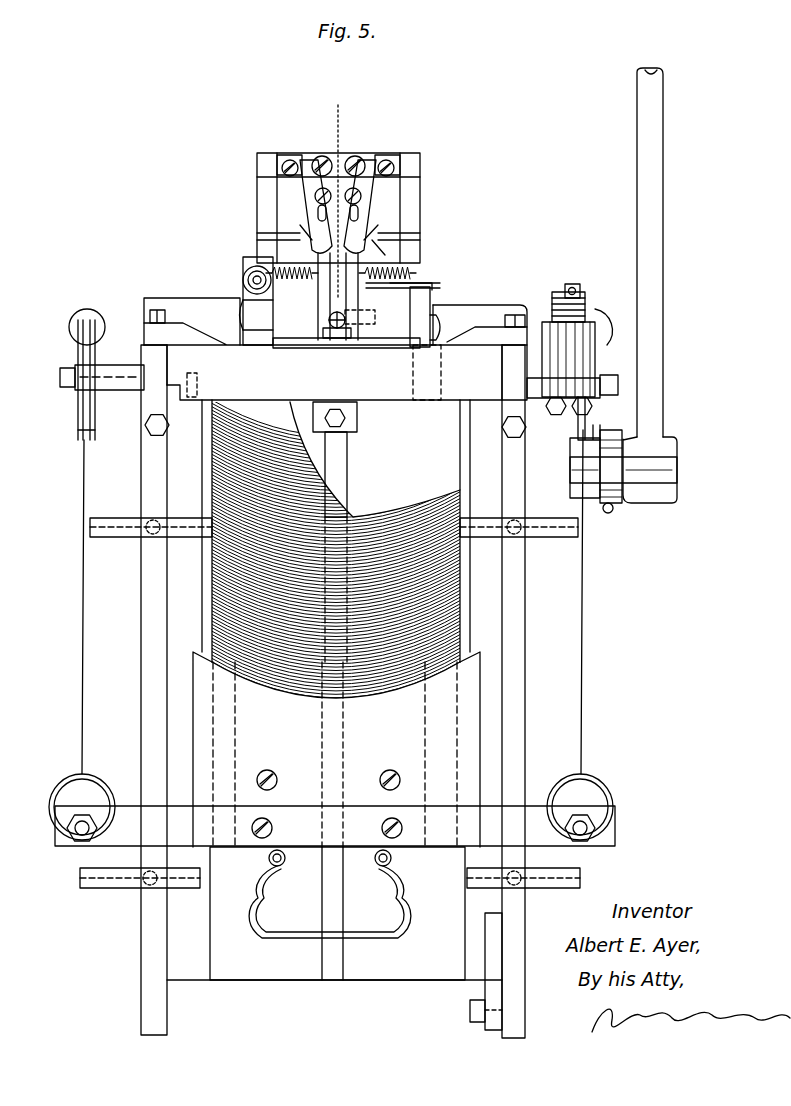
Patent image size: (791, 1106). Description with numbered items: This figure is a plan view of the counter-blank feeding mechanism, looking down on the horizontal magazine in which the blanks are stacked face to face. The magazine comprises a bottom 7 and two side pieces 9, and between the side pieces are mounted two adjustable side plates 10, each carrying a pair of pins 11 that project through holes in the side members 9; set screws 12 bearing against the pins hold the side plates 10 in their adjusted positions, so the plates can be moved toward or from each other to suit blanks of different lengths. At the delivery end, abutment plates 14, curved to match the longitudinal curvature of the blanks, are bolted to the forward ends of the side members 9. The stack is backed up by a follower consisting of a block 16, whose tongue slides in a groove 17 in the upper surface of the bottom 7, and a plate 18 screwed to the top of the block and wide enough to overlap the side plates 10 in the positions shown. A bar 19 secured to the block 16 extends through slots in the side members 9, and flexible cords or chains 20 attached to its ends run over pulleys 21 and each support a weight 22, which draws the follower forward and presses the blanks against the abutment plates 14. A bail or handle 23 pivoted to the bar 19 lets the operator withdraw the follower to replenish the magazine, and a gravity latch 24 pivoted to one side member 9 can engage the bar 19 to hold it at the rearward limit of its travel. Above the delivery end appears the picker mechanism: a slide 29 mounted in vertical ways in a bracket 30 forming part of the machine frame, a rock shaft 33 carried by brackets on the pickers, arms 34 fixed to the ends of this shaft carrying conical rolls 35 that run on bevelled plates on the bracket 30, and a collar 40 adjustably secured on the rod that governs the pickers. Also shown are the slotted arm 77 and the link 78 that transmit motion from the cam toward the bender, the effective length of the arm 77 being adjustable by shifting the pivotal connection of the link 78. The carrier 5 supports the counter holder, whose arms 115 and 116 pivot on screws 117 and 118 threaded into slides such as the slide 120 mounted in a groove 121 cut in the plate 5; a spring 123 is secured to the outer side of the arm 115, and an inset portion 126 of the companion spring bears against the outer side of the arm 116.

The carrier 5 is at (412, 200).
The bottom 7 is at (230, 972).
The side pieces 9 is at (141, 626).
The adjustable side plates 10 is at (203, 594).
The pins 11 is at (118, 537).
The set screws 12 is at (148, 524).
The abutment plates 14 is at (185, 320).
The block 16 is at (430, 745).
The groove 17 is at (348, 480).
The plate 18 is at (193, 728).
The bar 19 is at (306, 850).
The flexible cords or chains 20 is at (82, 694).
The pulleys 21 is at (78, 431).
The weight 22 is at (88, 309).
The bail or handle 23 is at (278, 936).
The gravity latch 24 is at (490, 970).
The slide 29 is at (396, 378).
The bracket 30 is at (437, 380).
The rock shaft 33 is at (381, 298).
The arms 34 is at (426, 294).
The conical rolls 35 is at (238, 302).
The collar 40 is at (252, 262).
The arm 77 is at (612, 509).
The link 78 is at (656, 252).
The arm 115 is at (312, 322).
The arm 116 is at (352, 322).
The screw 117 is at (324, 157).
The screw 118 is at (360, 158).
The slide 120 is at (396, 168).
The groove 121 is at (258, 166).
The spring 123 is at (300, 197).
The inset portion 126 is at (372, 226).